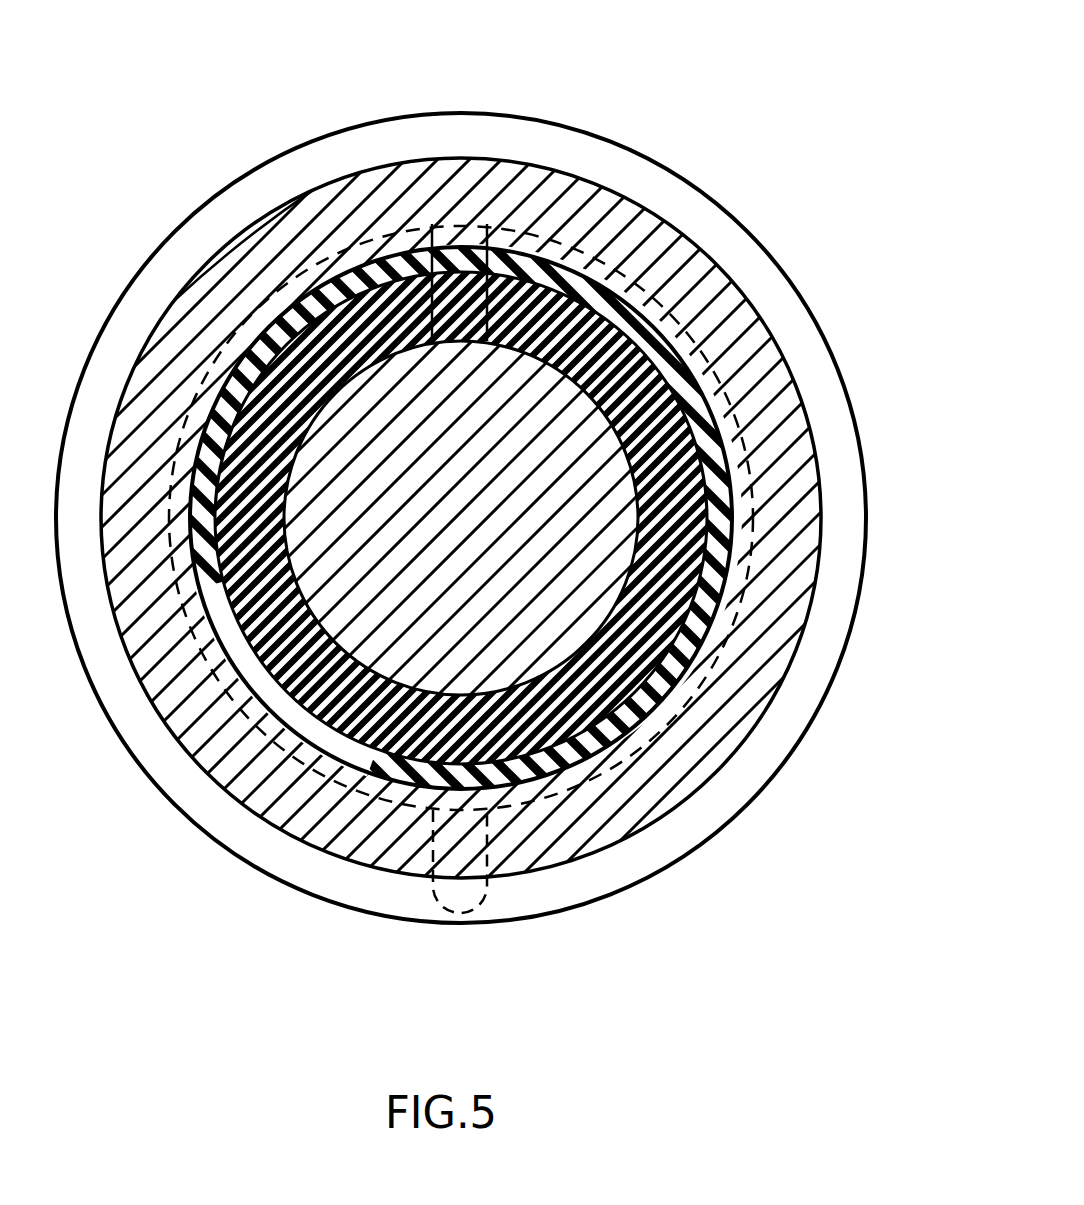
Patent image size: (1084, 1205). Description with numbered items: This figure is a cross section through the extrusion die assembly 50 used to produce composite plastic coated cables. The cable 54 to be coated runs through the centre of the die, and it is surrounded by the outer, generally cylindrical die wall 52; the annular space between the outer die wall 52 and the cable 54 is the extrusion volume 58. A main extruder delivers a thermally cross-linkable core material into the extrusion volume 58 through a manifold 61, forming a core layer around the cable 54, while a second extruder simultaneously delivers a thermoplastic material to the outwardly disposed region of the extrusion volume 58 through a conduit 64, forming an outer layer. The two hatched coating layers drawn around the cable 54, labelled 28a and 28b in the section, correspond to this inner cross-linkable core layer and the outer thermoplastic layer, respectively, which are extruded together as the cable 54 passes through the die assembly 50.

The extrusion die assembly 50 is at (785, 165).
The outer die wall 52 is at (760, 355).
The cable 54 is at (533, 538).
The extrusion volume 58 is at (662, 598).
The manifold 61 is at (478, 218).
The conduit 64 is at (487, 897).
The inner liner layer 28a is at (573, 713).
The intermediate braided layer 28b is at (558, 760).